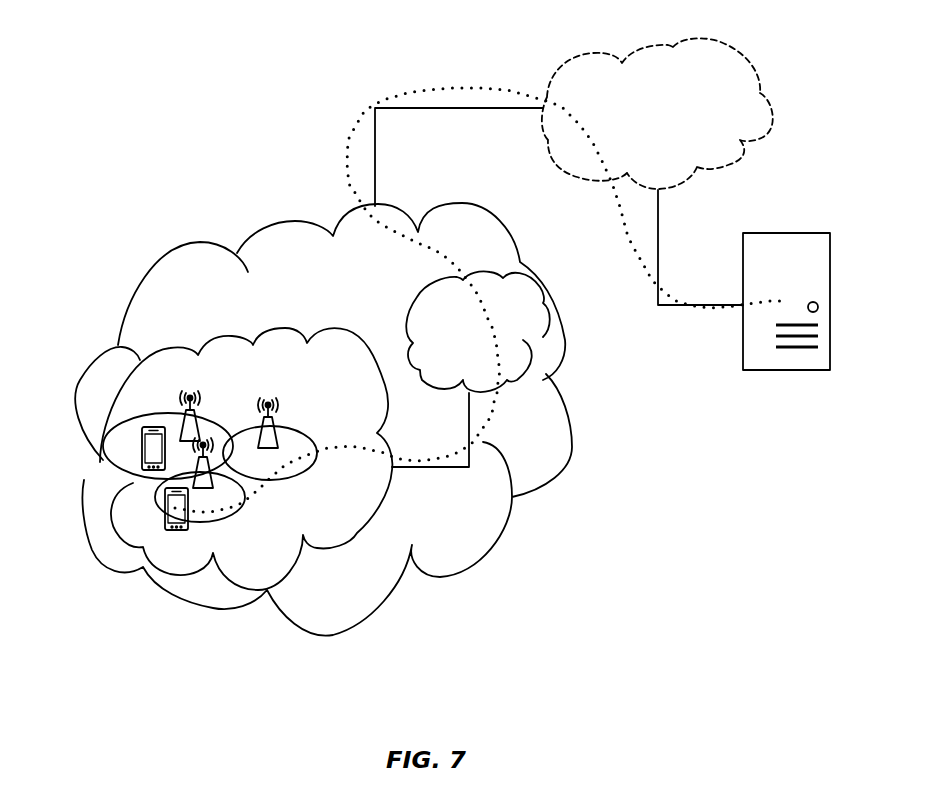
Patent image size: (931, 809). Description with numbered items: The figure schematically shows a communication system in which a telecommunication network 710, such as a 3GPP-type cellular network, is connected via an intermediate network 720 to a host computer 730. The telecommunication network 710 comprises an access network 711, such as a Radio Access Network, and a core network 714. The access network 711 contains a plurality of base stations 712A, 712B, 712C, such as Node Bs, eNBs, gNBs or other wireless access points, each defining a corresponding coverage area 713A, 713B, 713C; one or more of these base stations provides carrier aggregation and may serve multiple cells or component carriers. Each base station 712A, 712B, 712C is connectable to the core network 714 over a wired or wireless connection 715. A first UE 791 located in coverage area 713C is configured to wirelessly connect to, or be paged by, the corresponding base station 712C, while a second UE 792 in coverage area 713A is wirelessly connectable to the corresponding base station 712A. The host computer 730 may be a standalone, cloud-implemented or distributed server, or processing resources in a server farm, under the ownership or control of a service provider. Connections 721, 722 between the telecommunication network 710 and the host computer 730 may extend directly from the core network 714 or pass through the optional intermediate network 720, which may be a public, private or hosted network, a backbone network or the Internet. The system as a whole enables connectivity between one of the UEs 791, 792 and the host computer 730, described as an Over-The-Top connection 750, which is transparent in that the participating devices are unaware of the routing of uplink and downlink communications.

The telecommunication network 710 is at (338, 267).
The access network 711 is at (262, 387).
The base station 712A is at (213, 487).
The base station 712B is at (279, 402).
The base station 712C is at (178, 398).
The coverage area 713A is at (242, 507).
The coverage area 713B is at (307, 473).
The coverage area 713C is at (134, 413).
The core network 714 is at (542, 331).
The wired or wireless connection 715 is at (472, 415).
The intermediate network 720 is at (672, 126).
The connection 721 is at (458, 108).
The connection 722 is at (680, 307).
The host computer 730 is at (786, 313).
The OTT connection 750 is at (358, 118).
The first UE 791 is at (143, 472).
The second UE 792 is at (170, 530).